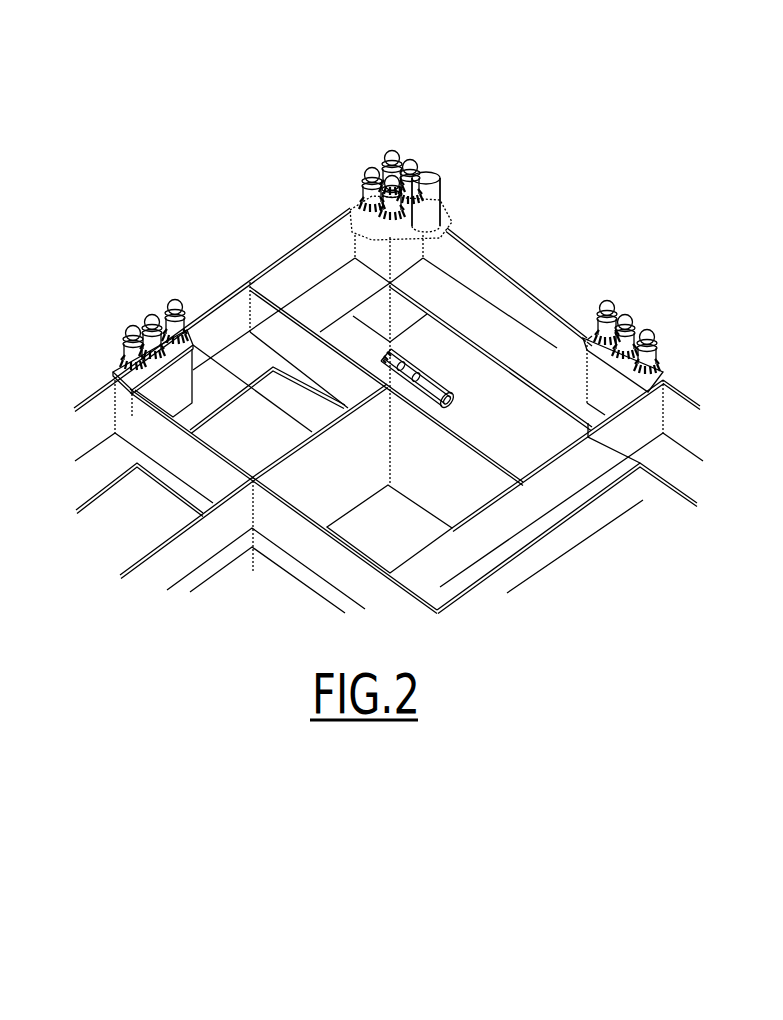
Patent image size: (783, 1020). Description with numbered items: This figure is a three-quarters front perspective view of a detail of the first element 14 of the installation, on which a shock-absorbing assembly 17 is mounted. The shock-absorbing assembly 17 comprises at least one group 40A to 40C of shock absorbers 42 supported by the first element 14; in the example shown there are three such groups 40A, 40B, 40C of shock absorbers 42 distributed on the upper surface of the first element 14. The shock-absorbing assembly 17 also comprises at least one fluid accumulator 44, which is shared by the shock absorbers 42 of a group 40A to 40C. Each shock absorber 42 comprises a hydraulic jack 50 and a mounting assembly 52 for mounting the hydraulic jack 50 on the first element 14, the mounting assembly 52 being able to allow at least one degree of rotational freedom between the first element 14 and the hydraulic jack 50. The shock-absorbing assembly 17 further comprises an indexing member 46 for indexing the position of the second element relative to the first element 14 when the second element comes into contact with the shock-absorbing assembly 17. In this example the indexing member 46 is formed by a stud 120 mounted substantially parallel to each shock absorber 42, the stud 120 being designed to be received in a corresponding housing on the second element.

The first element 14 is at (288, 592).
The shock-absorbing assembly 17 is at (413, 152).
The group of shock absorbers 40A is at (447, 153).
The group of shock absorbers 40B is at (665, 332).
The group of shock absorbers 40C is at (132, 318).
The shock absorber 42 is at (183, 332).
The fluid accumulator 44 is at (427, 365).
The indexing member 46 is at (457, 177).
The hydraulic jack 50 is at (593, 337).
The mounting assembly 52 is at (592, 340).
The stud 120 is at (428, 202).